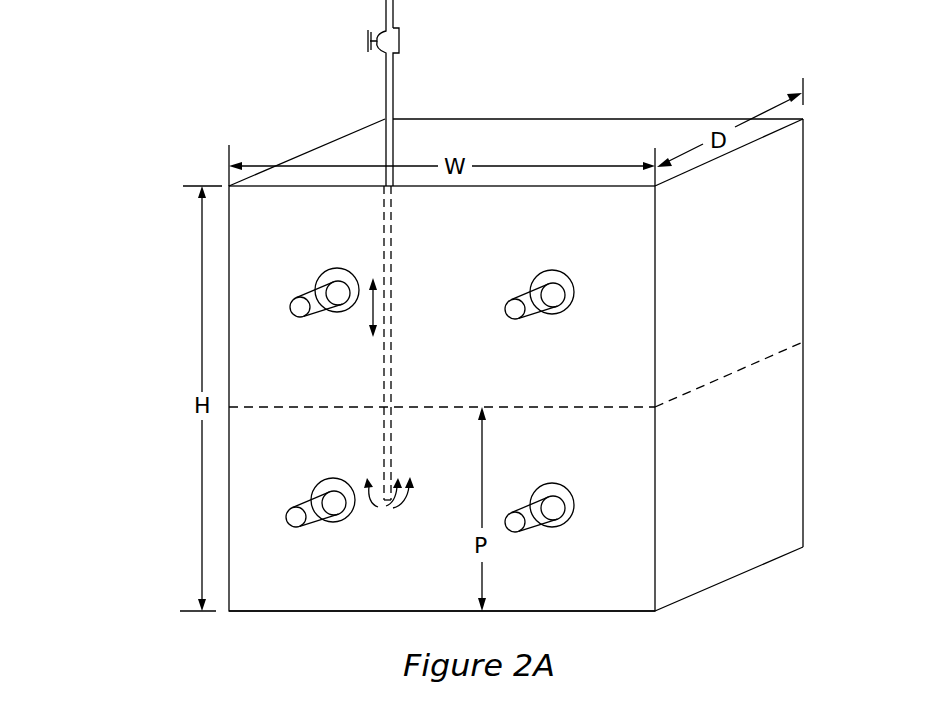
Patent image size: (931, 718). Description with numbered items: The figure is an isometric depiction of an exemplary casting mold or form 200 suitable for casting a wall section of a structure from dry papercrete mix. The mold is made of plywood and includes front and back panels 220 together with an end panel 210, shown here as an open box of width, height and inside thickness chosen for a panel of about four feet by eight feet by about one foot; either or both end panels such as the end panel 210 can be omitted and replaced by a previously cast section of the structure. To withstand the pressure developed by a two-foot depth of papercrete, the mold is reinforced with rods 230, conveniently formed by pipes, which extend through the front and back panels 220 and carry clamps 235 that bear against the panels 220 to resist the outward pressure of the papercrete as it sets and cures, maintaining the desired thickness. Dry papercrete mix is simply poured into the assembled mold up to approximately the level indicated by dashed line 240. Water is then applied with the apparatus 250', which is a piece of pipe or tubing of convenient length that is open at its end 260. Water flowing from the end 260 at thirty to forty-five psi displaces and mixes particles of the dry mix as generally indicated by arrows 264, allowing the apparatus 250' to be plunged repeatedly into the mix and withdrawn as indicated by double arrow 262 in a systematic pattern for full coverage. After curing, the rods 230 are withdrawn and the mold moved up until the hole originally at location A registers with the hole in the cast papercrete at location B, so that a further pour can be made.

The mold or form 200 is at (120, 198).
The reaction chamber 210 is at (770, 258).
The front and back panels 220 is at (290, 592).
The rods 230 is at (532, 524).
The clamps 235 is at (549, 501).
The dashed line 240 is at (432, 407).
The apparatus 250' is at (335, 250).
The end 260 is at (381, 472).
The double arrow 262 is at (370, 315).
The arrows 264 is at (392, 505).
The location A is at (535, 477).
The location B is at (520, 274).